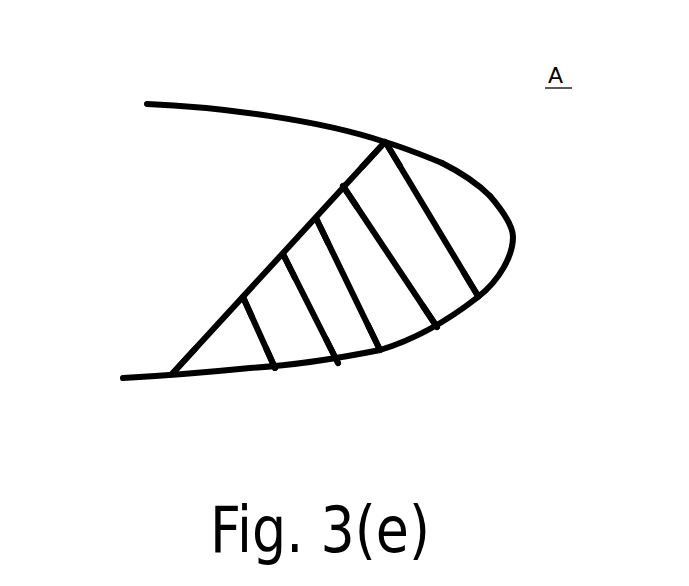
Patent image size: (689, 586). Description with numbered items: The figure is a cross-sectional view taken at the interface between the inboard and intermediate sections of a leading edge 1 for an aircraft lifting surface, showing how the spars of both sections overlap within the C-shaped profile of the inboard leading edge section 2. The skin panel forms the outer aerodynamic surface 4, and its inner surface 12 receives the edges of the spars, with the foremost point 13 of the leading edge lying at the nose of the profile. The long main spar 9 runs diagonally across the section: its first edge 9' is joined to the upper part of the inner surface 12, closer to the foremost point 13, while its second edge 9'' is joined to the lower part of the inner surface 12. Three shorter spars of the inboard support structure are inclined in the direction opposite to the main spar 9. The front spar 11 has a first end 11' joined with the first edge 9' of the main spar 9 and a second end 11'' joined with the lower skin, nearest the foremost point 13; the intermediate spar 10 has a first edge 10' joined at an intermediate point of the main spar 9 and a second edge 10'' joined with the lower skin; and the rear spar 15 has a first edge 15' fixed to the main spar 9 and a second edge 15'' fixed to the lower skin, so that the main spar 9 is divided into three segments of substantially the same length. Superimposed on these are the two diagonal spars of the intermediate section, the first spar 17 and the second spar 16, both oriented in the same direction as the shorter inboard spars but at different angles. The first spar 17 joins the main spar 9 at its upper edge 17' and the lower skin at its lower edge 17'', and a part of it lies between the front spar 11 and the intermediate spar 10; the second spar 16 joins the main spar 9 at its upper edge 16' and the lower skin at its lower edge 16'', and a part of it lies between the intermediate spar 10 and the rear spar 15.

The leading edge 1 is at (556, 311).
The inboard leading edge section 2 is at (490, 160).
The aerodynamic surface 4 is at (442, 155).
The main spar 9 is at (253, 258).
The first edge of main spar 9' is at (372, 110).
The second edge of main spar 9'' is at (173, 400).
The intermediate spar 10 is at (350, 335).
The first edge of intermediate spar 10' is at (302, 204).
The second edge of intermediate spar 10'' is at (401, 388).
The front spar 11 is at (488, 219).
The first end of front spar 11' is at (412, 118).
The second end of front spar 11'' is at (505, 337).
The inner surface of skin panel 12 is at (170, 134).
The foremost point 13 is at (515, 238).
The rear spar 15 is at (239, 374).
The first edge of rear spar 15' is at (222, 276).
The second edge of rear spar 15'' is at (272, 400).
The second spar 16 is at (241, 273).
The upper edge of second spar 16' is at (236, 155).
The lower edge of second spar 16'' is at (337, 395).
The first spar 17 is at (411, 199).
The upper edge of first spar 17' is at (315, 120).
The lower edge of first spar 17'' is at (453, 379).